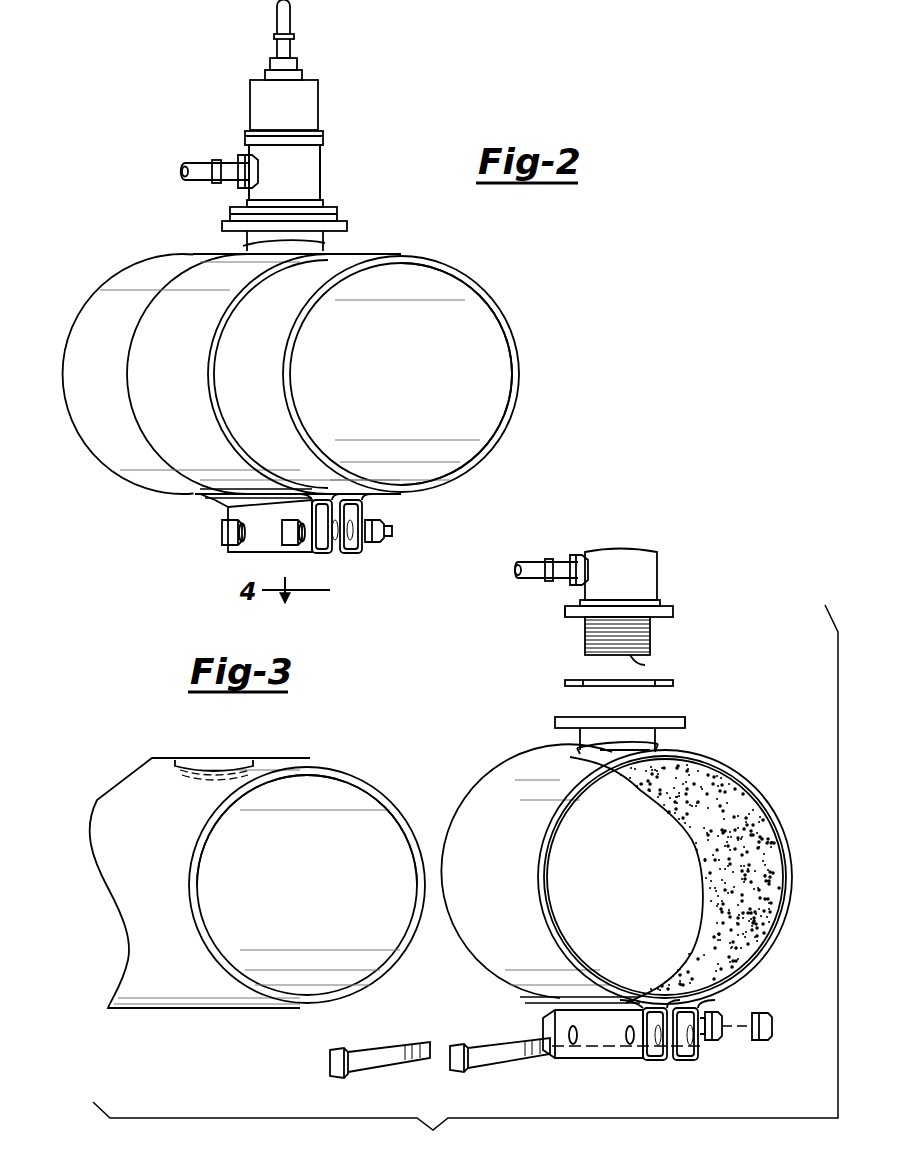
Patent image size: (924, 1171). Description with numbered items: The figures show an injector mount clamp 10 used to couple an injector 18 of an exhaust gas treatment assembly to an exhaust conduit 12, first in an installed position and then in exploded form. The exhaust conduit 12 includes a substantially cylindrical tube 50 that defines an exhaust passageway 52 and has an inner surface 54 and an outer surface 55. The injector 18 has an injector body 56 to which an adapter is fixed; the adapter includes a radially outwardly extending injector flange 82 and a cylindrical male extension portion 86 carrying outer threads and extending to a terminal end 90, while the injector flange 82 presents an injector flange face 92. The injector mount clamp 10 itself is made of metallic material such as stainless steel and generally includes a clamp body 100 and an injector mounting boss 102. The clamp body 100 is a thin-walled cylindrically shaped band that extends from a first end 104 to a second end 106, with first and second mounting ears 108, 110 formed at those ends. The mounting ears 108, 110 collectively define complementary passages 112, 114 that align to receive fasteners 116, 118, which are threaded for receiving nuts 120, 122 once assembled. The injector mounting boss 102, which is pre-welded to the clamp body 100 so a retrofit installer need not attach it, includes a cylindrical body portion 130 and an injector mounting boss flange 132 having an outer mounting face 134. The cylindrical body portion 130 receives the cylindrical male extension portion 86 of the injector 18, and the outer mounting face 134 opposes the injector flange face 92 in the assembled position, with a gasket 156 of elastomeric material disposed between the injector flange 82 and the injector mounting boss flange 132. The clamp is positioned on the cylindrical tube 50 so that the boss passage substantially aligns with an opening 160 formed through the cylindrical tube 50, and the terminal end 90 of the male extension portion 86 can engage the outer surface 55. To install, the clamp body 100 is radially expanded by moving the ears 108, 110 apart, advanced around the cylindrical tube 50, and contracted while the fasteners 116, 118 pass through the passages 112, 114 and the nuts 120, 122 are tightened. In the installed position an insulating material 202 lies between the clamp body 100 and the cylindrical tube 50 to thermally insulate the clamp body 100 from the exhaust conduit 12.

In FIG. 2, the injector mount clamp 10 is at (188, 293).
In FIG. 2, the exhaust conduit 12 is at (450, 262).
In FIG. 3, the exhaust conduit 12 is at (115, 868).
In FIG. 2, the injector 18 is at (326, 97).
In FIG. 3, the injector 18 is at (660, 552).
In FIG. 2, the cylindrical tube 50 is at (487, 392).
In FIG. 2, the exhaust passageway 52 is at (364, 374).
In FIG. 3, the exhaust passageway 52 is at (277, 877).
In FIG. 2, the inner surface 54 is at (490, 357).
In FIG. 3, the inner surface 54 is at (400, 862).
In FIG. 2, the outer surface 55 is at (262, 352).
In FIG. 3, the outer surface 55 is at (168, 890).
In FIG. 2, the injector body 56 is at (326, 165).
In FIG. 3, the injector flange 82 is at (565, 612).
In FIG. 3, the cylindrical male extension portion 86 is at (648, 628).
In FIG. 3, the terminal end 90 is at (640, 665).
In FIG. 3, the injector flange face 92 is at (565, 612).
In FIG. 2, the clamp body 100 is at (172, 330).
In FIG. 3, the clamp body 100 is at (505, 818).
In FIG. 2, the injector mounting boss 102 is at (345, 230).
In FIG. 3, the injector mounting boss 102 is at (555, 730).
In FIG. 2, the first end 104 is at (322, 553).
In FIG. 3, the first end 104 is at (650, 1056).
In FIG. 2, the second end 106 is at (352, 553).
In FIG. 3, the second end 106 is at (685, 1060).
In FIG. 2, the first mounting ear 108 is at (262, 520).
In FIG. 3, the first mounting ear 108 is at (637, 1060).
In FIG. 2, the second mounting ear 110 is at (390, 538).
In FIG. 3, the second mounting ear 110 is at (716, 1043).
In FIG. 3, the first passage 112 is at (572, 1035).
In FIG. 3, the second passage 114 is at (628, 1046).
In FIG. 2, the first fastener 116 is at (218, 530).
In FIG. 3, the first fastener 116 is at (328, 1062).
In FIG. 2, the second fastener 118 is at (278, 532).
In FIG. 3, the second fastener 118 is at (450, 1062).
In FIG. 3, the first nut 120 is at (715, 1022).
In FIG. 2, the second nut 122 is at (385, 527).
In FIG. 3, the second nut 122 is at (762, 1045).
In FIG. 3, the cylindrical body portion 130 is at (655, 742).
In FIG. 3, the injector mounting boss flange 132 is at (558, 718).
In FIG. 3, the outer mounting face 134 is at (680, 716).
In FIG. 2, the gasket 156 is at (235, 220).
In FIG. 3, the gasket 156 is at (565, 683).
In FIG. 3, the opening 160 is at (205, 768).
In FIG. 3, the insulating material 202 is at (700, 885).